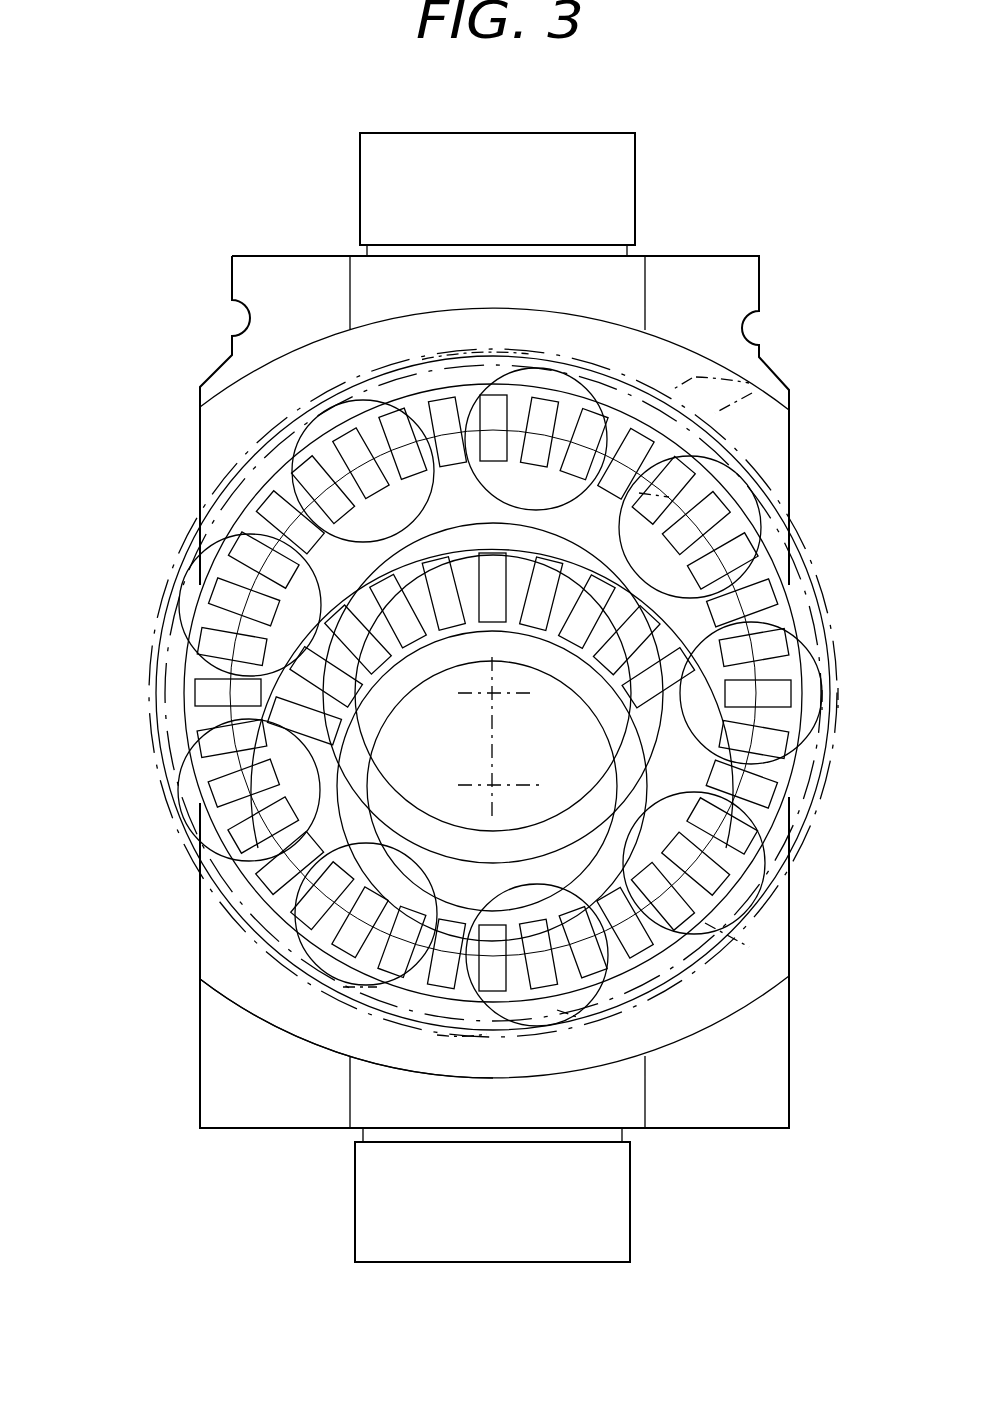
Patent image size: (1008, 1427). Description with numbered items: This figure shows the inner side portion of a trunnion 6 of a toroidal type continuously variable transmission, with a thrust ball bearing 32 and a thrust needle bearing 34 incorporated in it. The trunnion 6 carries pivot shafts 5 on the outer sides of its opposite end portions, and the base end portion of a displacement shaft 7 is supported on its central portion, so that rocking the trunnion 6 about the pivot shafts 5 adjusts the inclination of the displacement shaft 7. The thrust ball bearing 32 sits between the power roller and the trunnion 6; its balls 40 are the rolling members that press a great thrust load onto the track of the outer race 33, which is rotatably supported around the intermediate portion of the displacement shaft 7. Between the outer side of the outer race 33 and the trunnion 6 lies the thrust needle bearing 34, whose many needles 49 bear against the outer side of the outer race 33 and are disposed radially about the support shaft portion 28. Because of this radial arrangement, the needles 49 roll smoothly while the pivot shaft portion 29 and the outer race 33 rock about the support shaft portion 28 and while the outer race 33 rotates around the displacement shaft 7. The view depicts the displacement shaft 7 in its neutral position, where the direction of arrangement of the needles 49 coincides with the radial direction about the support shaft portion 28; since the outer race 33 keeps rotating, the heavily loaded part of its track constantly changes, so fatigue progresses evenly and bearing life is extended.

The pivot shaft 5 is at (572, 152).
The trunnion 6 is at (772, 1013).
The displacement shaft 7 is at (513, 807).
The support shaft portion 28 is at (199, 893).
The pivot shaft portion 29 is at (188, 757).
The thrust ball bearing 32 is at (768, 830).
The outer race 33 is at (668, 372).
The thrust needle bearing 34 is at (378, 988).
The ball 40 is at (705, 427).
The needle 49 is at (540, 405).